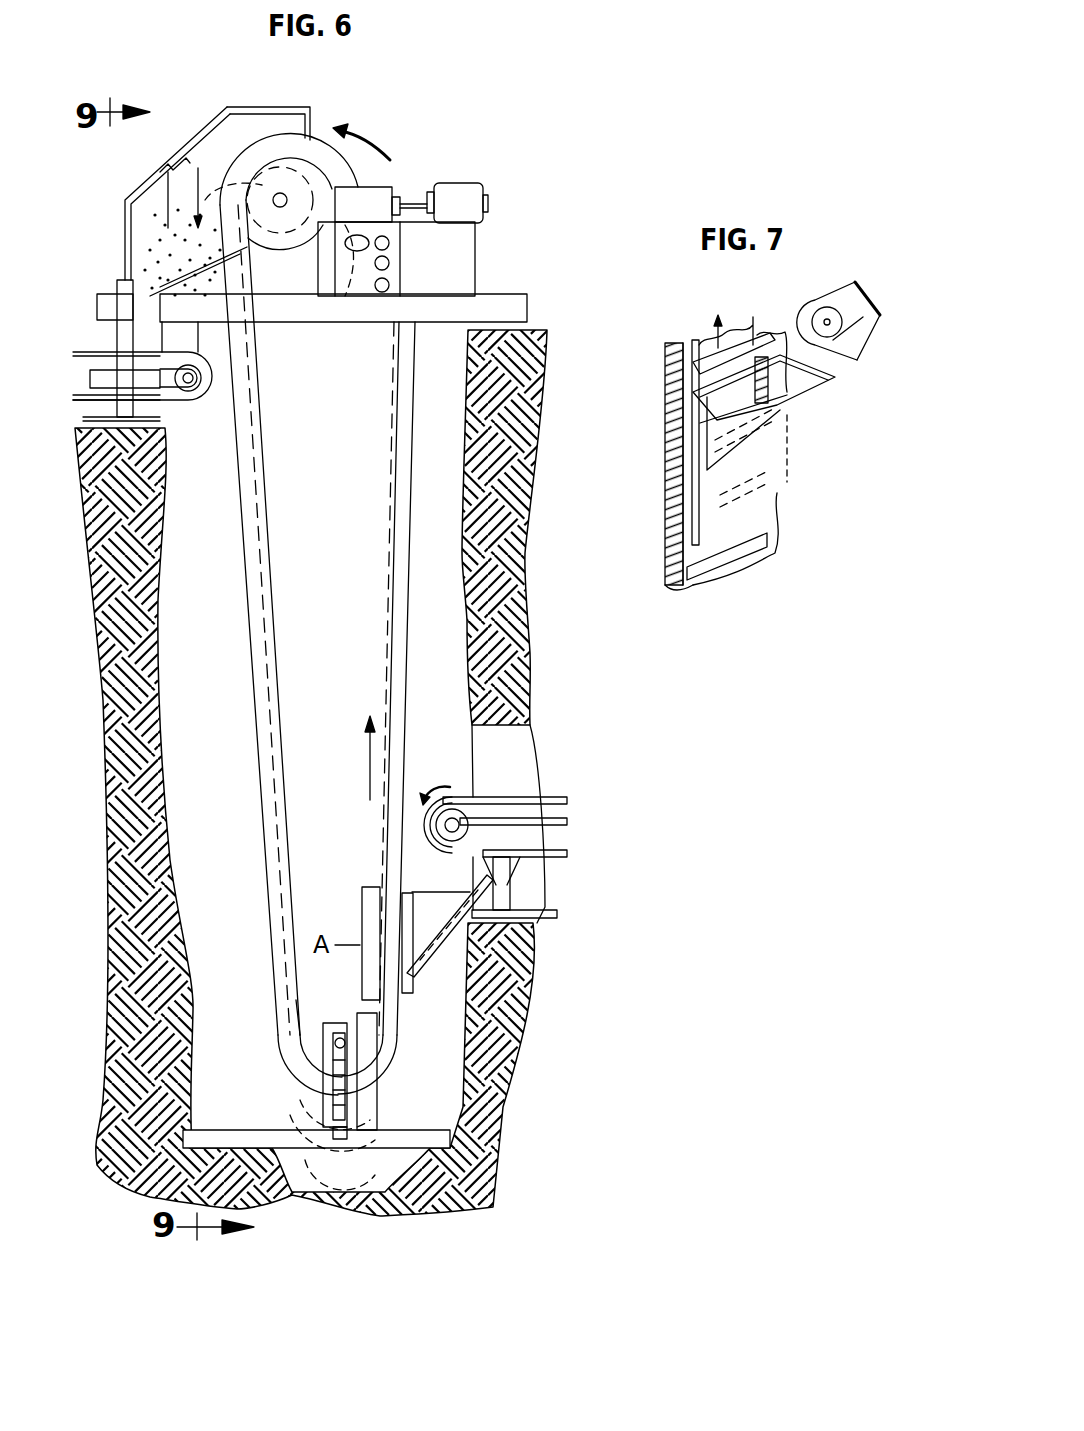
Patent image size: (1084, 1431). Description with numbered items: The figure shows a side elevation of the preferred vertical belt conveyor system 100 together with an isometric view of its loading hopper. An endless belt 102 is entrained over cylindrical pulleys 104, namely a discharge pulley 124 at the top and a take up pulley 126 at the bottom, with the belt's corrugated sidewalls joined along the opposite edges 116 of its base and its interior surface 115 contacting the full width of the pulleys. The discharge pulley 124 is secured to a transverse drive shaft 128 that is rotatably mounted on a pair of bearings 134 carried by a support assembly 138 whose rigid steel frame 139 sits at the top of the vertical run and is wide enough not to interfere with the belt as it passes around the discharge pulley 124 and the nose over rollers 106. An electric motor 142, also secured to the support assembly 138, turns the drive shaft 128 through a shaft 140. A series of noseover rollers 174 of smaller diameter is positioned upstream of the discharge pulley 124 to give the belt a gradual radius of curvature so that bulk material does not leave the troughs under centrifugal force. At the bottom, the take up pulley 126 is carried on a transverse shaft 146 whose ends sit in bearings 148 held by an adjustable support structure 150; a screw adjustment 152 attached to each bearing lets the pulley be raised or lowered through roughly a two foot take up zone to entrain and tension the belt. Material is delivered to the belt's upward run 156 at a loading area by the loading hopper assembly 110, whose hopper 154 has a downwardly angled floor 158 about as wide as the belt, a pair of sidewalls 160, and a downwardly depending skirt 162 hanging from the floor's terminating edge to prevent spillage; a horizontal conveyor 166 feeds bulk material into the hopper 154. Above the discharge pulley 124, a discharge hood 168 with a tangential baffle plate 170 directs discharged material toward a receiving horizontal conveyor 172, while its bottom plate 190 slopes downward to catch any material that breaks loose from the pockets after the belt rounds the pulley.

In FIG. 6, the vertical belt conveyor system 100 is at (403, 171).
In FIG. 6, the endless belt 102 is at (238, 506).
In FIG. 6, the cylindrical pulleys 104 is at (222, 270).
In FIG. 6, the nose over rollers 106 is at (395, 235).
In FIG. 6, the loading hopper assembly 110 is at (447, 952).
In FIG. 7, the loading hopper assembly 110 is at (835, 390).
In FIG. 6, the interior surface 115 is at (383, 437).
In FIG. 6, the opposite edges 116 is at (250, 708).
In FIG. 6, the discharge pulley 124 is at (222, 247).
In FIG. 6, the take up pulley 126 is at (312, 1023).
In FIG. 6, the drive shaft 128 is at (280, 193).
In FIG. 6, the bearings 134 is at (335, 188).
In FIG. 6, the support assembly 138 is at (487, 288).
In FIG. 6, the rigid steel frame 139 is at (468, 250).
In FIG. 6, the shaft 140 is at (425, 198).
In FIG. 6, the electric motor 142 is at (468, 197).
In FIG. 6, the transverse shaft 146 is at (335, 1045).
In FIG. 6, the bearings 148 is at (345, 1043).
In FIG. 6, the adjustable support structure 150 is at (367, 1077).
In FIG. 6, the screw adjustment 152 is at (397, 1120).
In FIG. 7, the hopper 154 is at (823, 393).
In FIG. 6, the upward run 156 is at (352, 758).
In FIG. 6, the downwardly angled floor 158 is at (452, 960).
In FIG. 7, the downwardly angled floor 158 is at (800, 407).
In FIG. 6, the sidewalls 160 is at (480, 868).
In FIG. 7, the sidewalls 160 is at (800, 355).
In FIG. 6, the skirt 162 is at (410, 990).
In FIG. 7, the skirt 162 is at (790, 458).
In FIG. 6, the horizontal conveyor 166 is at (513, 797).
In FIG. 7, the horizontal conveyor 166 is at (850, 292).
In FIG. 6, the discharge hood 168 is at (243, 103).
In FIG. 6, the baffle plate 170 is at (203, 122).
In FIG. 6, the horizontal conveyor 172 is at (183, 372).
In FIG. 6, the noseover rollers 174 is at (395, 270).
In FIG. 6, the bottom plate 190 is at (203, 300).